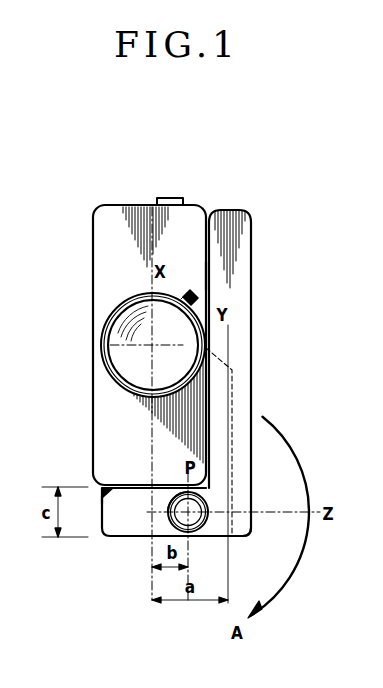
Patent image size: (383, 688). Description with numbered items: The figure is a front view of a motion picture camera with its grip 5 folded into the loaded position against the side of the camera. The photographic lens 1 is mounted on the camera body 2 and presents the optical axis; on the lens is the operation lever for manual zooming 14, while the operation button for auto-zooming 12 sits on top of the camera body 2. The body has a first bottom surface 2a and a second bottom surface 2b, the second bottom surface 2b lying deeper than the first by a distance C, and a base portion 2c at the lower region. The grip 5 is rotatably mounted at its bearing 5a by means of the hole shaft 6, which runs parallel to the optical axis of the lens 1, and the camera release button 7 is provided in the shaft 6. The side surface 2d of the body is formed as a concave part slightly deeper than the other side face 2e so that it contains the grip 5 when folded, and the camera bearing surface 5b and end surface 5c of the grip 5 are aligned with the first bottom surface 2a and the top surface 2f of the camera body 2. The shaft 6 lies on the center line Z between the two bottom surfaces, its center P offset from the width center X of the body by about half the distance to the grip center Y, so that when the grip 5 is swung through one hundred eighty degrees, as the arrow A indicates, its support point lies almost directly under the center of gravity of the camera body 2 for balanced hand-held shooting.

The photographic lens 1 is at (120, 353).
The camera body 2 is at (88, 248).
The first bottom surface 2a is at (125, 545).
The second bottom surface 2b is at (108, 493).
The base portion of housing 2c is at (118, 523).
The side surface 2d is at (218, 272).
The other side face 2e is at (242, 403).
The top surface 2f is at (130, 200).
The grip 5 is at (240, 356).
The bearing of the grip 5a is at (172, 496).
The camera bearing surface 5b is at (243, 538).
The end surface of the grip 5c is at (231, 202).
The shaft 6 is at (205, 517).
The camera release button 7 is at (197, 505).
The operation button for auto-zooming 12 is at (171, 200).
The operation lever for manual zooming 14 is at (196, 300).